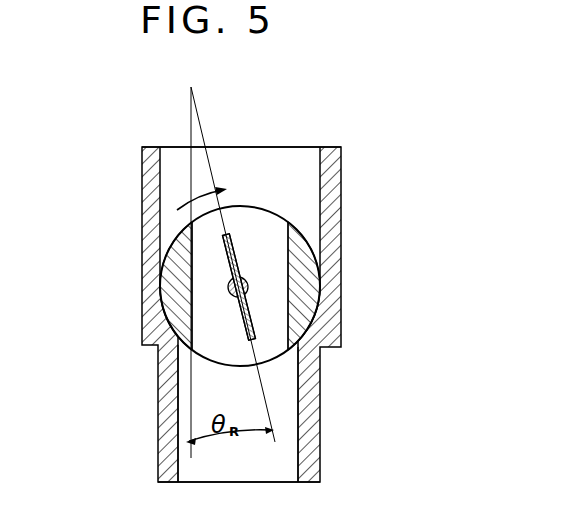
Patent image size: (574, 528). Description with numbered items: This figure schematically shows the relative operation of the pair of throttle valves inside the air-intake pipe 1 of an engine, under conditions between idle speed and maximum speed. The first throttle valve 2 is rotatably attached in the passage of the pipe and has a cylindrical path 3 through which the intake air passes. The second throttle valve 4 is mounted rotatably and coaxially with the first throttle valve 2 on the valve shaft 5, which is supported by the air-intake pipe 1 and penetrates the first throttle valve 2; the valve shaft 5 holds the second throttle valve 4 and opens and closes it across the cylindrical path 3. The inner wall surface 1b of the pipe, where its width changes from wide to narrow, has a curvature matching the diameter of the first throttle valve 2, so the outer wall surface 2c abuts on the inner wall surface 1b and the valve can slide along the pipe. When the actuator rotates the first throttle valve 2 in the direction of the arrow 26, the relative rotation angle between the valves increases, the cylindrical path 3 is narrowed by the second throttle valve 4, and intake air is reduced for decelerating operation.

The air-intake pipe 1 is at (142, 192).
The inner wall surface 1b is at (162, 331).
The first throttle valve 2 is at (176, 236).
The outer wall surface 2c is at (146, 288).
The cylindrical path 3 is at (287, 253).
The second throttle valve 4 is at (253, 333).
The valve shaft 5 is at (248, 284).
The arrow 26 is at (203, 195).